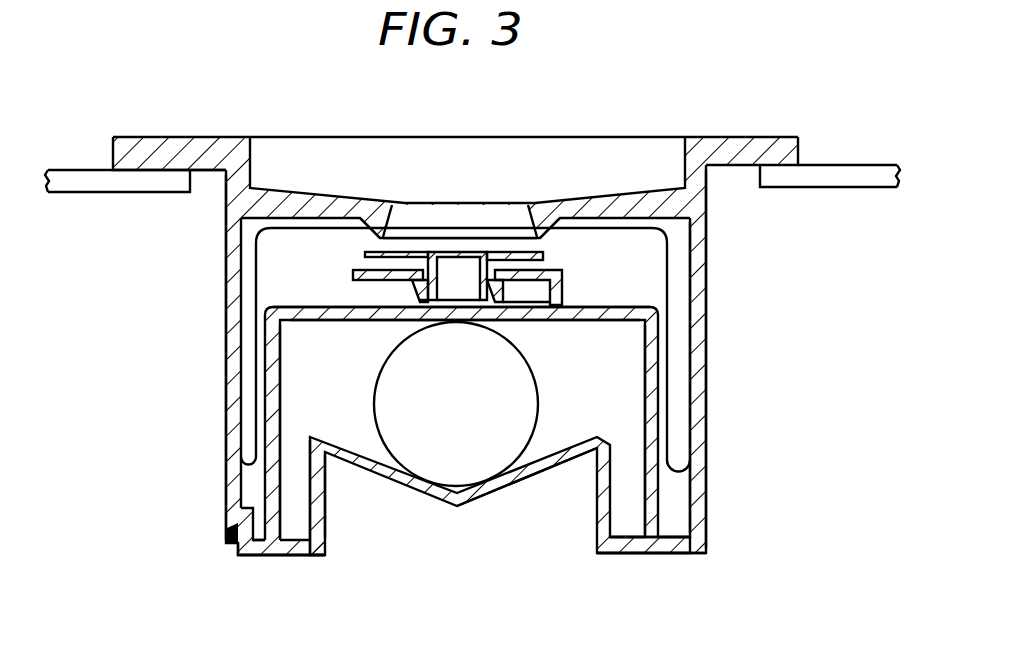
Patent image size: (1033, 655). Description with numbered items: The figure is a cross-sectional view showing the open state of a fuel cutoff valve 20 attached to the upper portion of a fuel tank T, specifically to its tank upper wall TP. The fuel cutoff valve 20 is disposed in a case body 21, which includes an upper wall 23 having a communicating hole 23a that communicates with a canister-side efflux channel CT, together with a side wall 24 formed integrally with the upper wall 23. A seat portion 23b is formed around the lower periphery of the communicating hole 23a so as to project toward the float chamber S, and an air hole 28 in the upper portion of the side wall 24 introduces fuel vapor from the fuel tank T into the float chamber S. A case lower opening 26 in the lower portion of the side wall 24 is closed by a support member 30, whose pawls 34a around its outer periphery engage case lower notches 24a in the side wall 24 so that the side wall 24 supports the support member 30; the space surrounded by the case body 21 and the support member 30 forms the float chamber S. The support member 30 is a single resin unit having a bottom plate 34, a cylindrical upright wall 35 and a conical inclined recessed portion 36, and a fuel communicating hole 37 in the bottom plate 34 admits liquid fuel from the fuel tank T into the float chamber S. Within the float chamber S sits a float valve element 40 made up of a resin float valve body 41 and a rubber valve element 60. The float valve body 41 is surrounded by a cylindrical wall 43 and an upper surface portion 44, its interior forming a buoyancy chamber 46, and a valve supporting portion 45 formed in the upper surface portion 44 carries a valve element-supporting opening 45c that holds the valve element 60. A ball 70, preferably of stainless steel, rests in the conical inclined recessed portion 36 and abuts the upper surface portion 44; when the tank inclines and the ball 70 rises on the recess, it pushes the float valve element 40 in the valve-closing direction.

The fuel cutoff valve 20 is at (716, 129).
The case body 21 is at (716, 322).
The upper wall 23 is at (610, 210).
The communicating hole 23a is at (473, 222).
The seat portion 23b is at (545, 230).
The side wall 24 is at (707, 397).
The case lower notches 24a is at (226, 510).
The case lower opening 26 is at (707, 505).
The air hole 28 is at (233, 287).
The support member 30 is at (410, 485).
The bottom plate 34 is at (330, 550).
The pawls 34a is at (230, 530).
The cylindrical upright wall 35 is at (326, 512).
The conical inclined recessed portion 36 is at (520, 483).
The fuel communicating hole 37 is at (290, 550).
The float valve element 40 is at (326, 269).
The float valve body 41 is at (297, 322).
The cylindrical wall 43 is at (273, 417).
The upper surface portion 44 is at (358, 322).
The valve supporting portion 45 is at (562, 283).
The valve element-supporting opening 45c is at (437, 262).
The buoyancy chamber 46 is at (565, 410).
The valve element 60 is at (370, 252).
The ball 70 is at (510, 355).
The canister-side efflux channel CT is at (307, 140).
The tank upper wall TP is at (855, 165).
The fuel tank T is at (762, 223).
The float chamber S is at (650, 270).